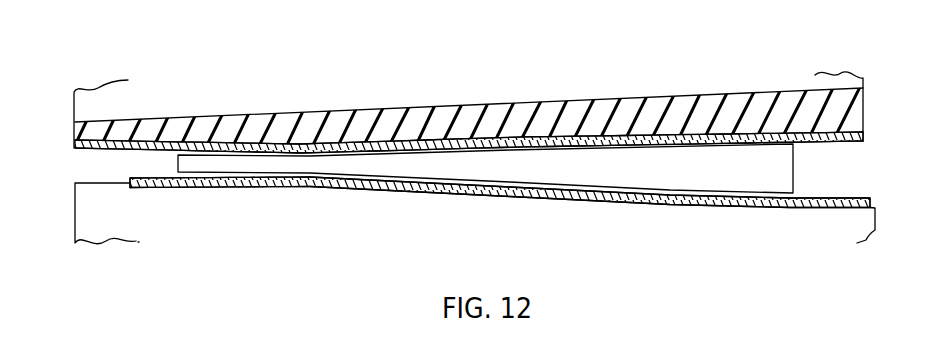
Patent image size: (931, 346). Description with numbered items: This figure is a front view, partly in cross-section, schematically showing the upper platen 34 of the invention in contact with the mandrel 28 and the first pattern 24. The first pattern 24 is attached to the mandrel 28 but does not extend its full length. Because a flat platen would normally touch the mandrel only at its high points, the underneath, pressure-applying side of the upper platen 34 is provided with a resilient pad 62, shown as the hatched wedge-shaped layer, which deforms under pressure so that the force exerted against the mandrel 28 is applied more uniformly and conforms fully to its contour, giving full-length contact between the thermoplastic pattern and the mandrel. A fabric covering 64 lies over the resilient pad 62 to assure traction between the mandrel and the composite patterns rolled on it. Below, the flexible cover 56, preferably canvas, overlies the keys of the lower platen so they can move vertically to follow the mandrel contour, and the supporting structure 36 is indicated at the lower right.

The first pattern 24 is at (270, 150).
The mandrel 28 is at (485, 197).
The upper platen 34 is at (843, 78).
The lower frame member 36 is at (858, 222).
The flexible cover 56 is at (835, 200).
The resilient pad 62 is at (625, 127).
The fabric covering 64 is at (102, 147).